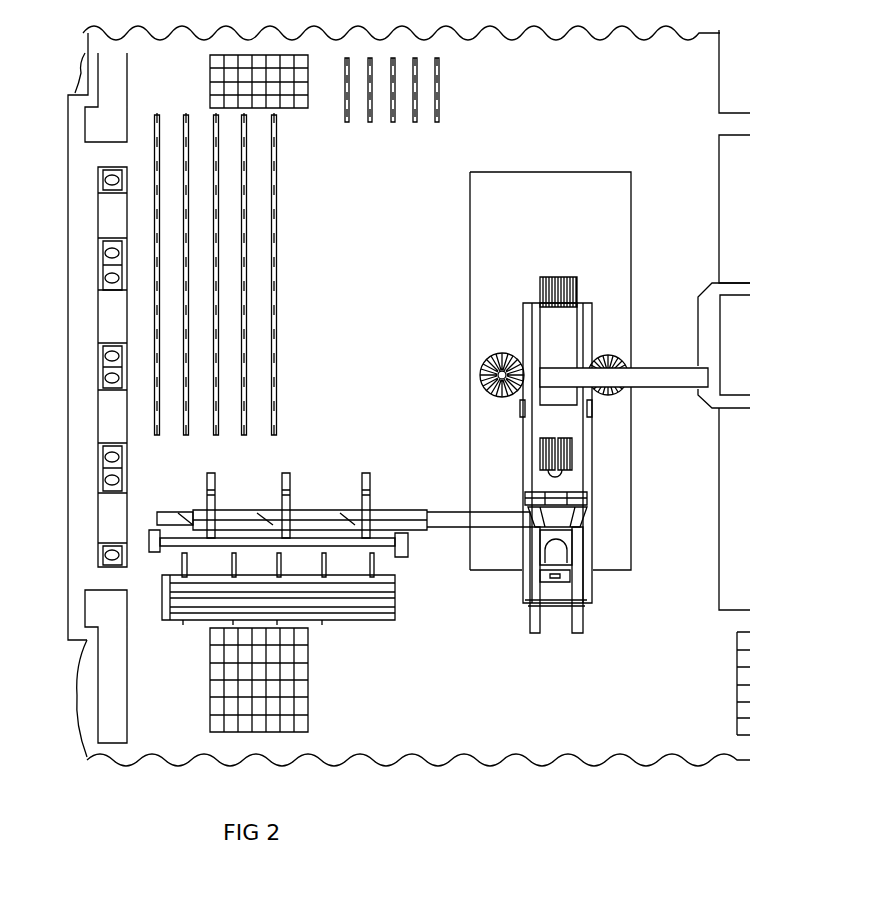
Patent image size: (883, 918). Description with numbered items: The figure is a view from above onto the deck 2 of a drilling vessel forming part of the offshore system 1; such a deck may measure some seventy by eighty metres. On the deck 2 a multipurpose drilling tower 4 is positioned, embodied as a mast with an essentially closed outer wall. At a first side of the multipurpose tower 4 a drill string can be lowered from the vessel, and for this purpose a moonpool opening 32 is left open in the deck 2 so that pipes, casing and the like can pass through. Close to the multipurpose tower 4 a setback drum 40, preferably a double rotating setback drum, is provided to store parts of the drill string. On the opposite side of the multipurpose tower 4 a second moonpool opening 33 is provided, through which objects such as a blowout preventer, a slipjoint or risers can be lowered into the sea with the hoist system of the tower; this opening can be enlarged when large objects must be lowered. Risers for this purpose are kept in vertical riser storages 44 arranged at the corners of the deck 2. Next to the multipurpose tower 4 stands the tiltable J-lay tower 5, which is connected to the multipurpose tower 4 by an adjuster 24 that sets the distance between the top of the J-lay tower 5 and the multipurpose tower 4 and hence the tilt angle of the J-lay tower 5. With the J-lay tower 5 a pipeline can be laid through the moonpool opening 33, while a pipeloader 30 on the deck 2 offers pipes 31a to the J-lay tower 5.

The offshore system 1 is at (826, 95).
The upper deck 2 is at (409, 396).
The multipurpose drilling tower 4 is at (578, 316).
The J-lay tower 5 is at (578, 533).
The adjuster 24 is at (591, 432).
The pipeloader 30 is at (307, 510).
The pipes 31a is at (352, 620).
The moonpool opening 32 is at (587, 271).
The moonpool opening 33 is at (578, 468).
The setback drum 40 is at (480, 376).
The vertical riser storages 44 is at (300, 100).